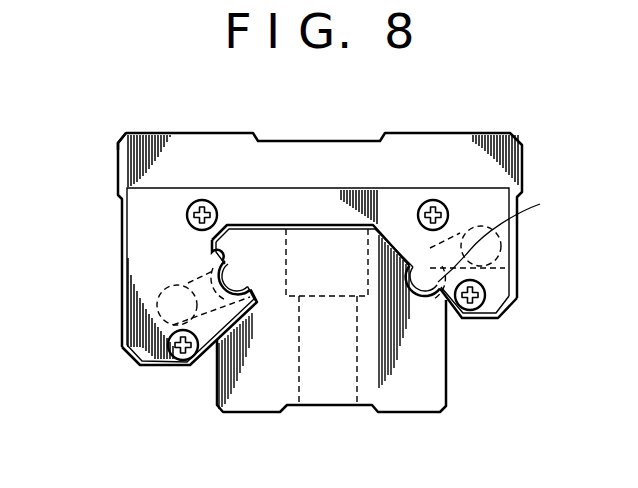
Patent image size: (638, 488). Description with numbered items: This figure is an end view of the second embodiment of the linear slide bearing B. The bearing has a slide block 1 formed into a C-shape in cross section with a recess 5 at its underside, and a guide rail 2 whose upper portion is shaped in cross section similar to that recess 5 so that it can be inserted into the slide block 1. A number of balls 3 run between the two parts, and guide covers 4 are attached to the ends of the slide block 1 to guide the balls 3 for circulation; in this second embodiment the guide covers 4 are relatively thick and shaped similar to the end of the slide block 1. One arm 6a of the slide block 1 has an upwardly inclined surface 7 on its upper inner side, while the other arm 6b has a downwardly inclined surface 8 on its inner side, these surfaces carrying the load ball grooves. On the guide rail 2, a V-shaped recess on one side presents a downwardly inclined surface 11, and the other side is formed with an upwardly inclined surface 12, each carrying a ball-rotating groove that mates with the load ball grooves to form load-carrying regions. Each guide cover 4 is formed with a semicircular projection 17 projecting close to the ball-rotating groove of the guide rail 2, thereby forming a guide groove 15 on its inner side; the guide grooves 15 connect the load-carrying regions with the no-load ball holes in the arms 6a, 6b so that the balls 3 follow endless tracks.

The linear slide bearing B is at (110, 162).
The slide block 1 is at (346, 136).
The guide rail 2 is at (218, 393).
The balls 3 is at (222, 257).
The guide covers 4 is at (437, 188).
The recess 5 is at (300, 229).
The arm 6a is at (120, 338).
The arm 6b is at (517, 291).
The upwardly inclined surface 7 is at (213, 250).
The downwardly inclined surface 8 is at (458, 318).
The downwardly inclined surface 11 is at (258, 303).
The upwardly inclined surface 12 is at (393, 232).
The guide groove 15 is at (157, 305).
The semicircular projection 17 is at (244, 280).